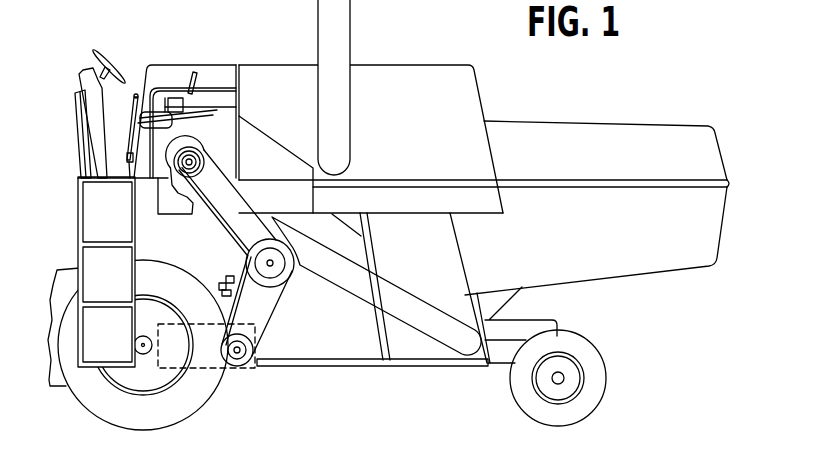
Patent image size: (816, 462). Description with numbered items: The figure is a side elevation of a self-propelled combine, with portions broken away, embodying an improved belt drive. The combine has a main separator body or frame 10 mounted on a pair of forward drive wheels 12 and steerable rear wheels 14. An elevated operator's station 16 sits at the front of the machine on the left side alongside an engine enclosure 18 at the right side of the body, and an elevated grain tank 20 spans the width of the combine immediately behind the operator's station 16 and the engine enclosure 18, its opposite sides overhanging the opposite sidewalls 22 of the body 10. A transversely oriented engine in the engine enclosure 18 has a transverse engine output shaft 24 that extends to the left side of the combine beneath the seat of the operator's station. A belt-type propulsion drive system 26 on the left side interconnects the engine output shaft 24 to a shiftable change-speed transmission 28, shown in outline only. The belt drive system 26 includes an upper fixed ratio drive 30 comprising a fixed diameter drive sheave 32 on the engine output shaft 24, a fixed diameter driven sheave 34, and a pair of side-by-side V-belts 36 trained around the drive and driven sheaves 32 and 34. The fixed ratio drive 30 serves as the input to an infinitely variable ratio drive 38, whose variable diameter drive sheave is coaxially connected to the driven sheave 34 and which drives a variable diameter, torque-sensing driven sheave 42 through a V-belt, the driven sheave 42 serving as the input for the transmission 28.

The main separator body or frame 10 is at (299, 370).
The forward drive wheels 12 is at (88, 402).
The steerable rear wheels 14 is at (517, 398).
The operator's station 16 is at (67, 89).
The engine enclosure 18 is at (227, 63).
The grain tank 20 is at (401, 64).
The sidewalls 22 is at (418, 262).
The engine output shaft 24 is at (201, 158).
The belt-type propulsion drive system 26 is at (291, 299).
The change-speed transmission 28 is at (202, 370).
The fixed ratio drive 30 is at (219, 228).
The drive sheave 32 is at (197, 143).
The driven sheave 34 is at (284, 262).
The V-belts 36 is at (243, 197).
The infinitely variable ratio drive 38 is at (273, 323).
The torque-sensing driven sheave 42 is at (231, 359).